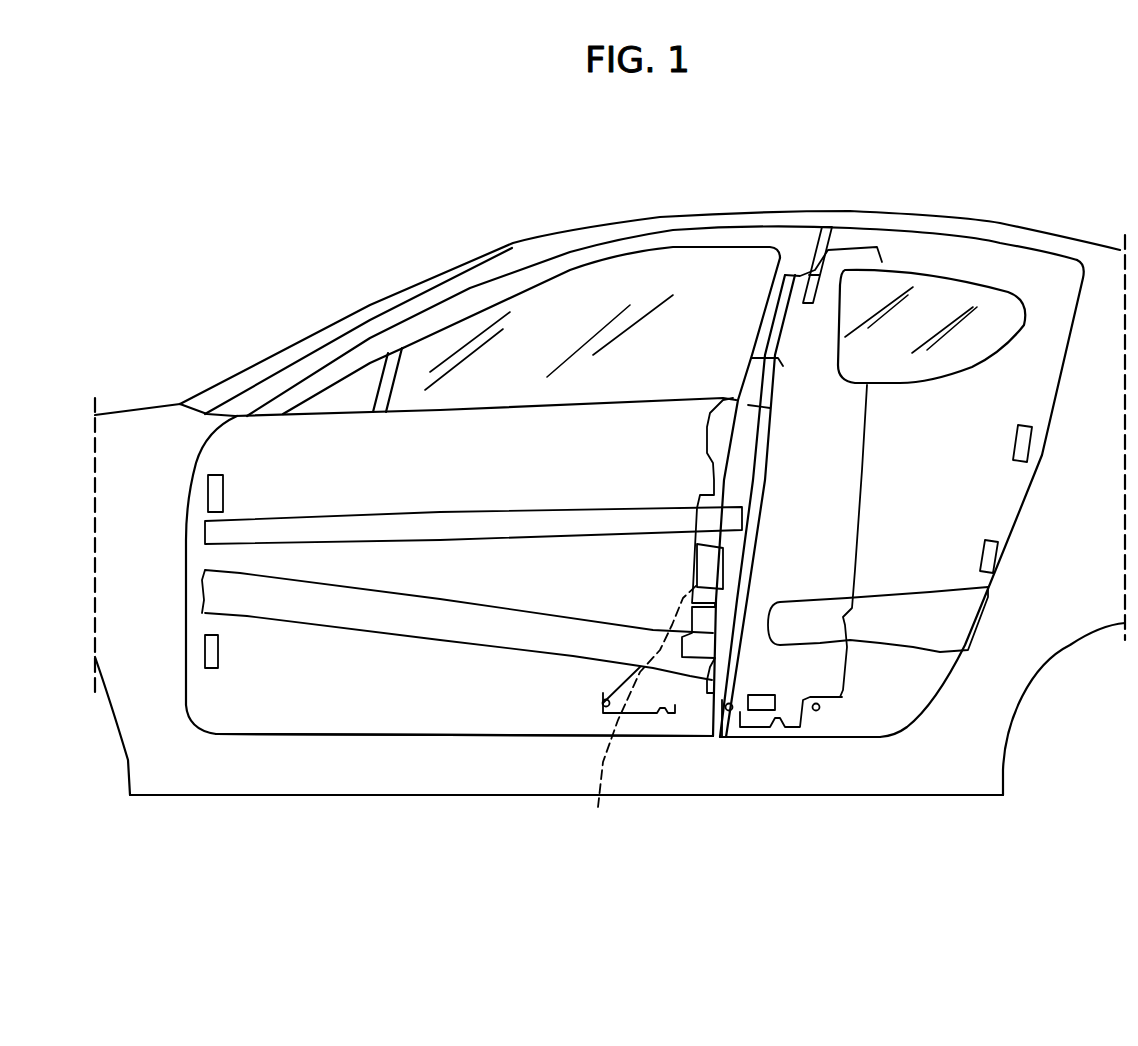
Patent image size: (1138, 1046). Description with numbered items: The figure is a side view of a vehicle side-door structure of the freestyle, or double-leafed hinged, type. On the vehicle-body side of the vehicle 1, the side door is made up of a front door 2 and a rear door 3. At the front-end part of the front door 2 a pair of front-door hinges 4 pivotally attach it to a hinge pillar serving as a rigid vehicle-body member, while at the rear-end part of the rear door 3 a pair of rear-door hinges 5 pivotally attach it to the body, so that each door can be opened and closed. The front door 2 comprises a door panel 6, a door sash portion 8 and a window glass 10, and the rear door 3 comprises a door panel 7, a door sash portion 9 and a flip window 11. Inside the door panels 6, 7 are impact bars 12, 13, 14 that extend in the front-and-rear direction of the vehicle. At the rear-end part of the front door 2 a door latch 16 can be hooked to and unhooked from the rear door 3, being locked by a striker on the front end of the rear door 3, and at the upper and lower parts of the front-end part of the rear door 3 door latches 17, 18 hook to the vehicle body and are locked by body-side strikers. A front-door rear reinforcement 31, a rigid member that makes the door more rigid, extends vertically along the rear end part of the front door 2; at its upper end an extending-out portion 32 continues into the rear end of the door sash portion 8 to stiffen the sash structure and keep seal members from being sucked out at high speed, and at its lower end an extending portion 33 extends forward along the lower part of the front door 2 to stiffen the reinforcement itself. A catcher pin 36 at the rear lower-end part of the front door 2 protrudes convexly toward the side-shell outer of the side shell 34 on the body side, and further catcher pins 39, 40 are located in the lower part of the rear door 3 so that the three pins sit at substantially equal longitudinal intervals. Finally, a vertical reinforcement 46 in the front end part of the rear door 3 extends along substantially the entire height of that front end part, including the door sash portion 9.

The vehicle 1 is at (628, 203).
The front door 2 is at (343, 735).
The rear door 3 is at (849, 738).
The front-door hinge 4 is at (223, 494).
The rear-door hinge 5 is at (1013, 437).
The door panel 6 is at (493, 480).
The door panel 7 is at (925, 492).
The door sash portion 8 is at (557, 265).
The door sash portion 9 is at (929, 255).
The window glass 10 is at (697, 366).
The flip window 11 is at (895, 366).
The impact bar 12 is at (355, 520).
The impact bar 13 is at (342, 622).
The impact bar 14 is at (880, 598).
The door latch 16 is at (697, 563).
The door latch 17 is at (809, 305).
The door latch 18 is at (755, 697).
The front-door rear reinforcement 31 is at (710, 424).
The extending-out portion 32 is at (783, 366).
The extending portion 33 is at (641, 711).
The side shell 34 is at (408, 770).
The catcher pin 36 is at (600, 700).
The catcher pin 39 is at (729, 711).
The catcher pin 40 is at (820, 706).
The vertical reinforcement 46 is at (863, 458).